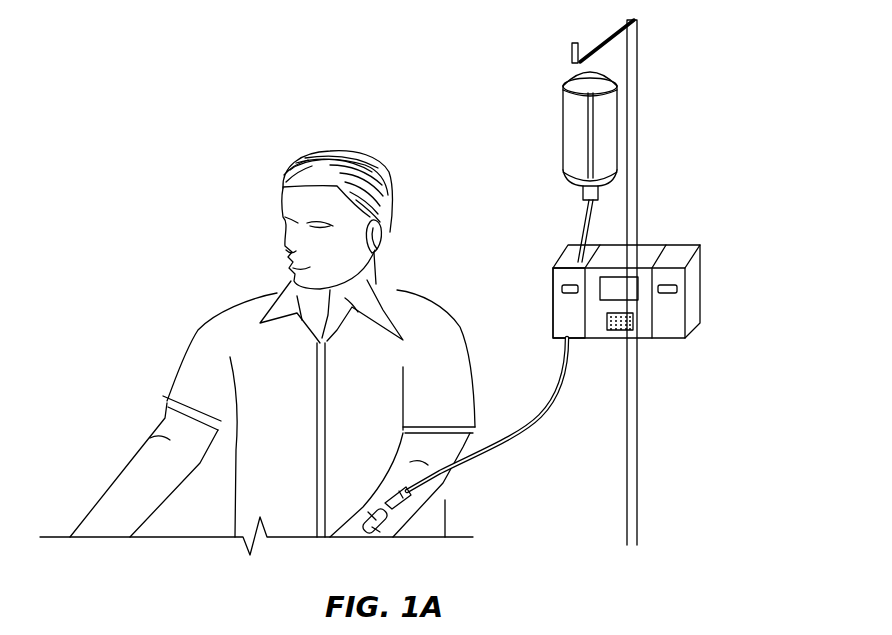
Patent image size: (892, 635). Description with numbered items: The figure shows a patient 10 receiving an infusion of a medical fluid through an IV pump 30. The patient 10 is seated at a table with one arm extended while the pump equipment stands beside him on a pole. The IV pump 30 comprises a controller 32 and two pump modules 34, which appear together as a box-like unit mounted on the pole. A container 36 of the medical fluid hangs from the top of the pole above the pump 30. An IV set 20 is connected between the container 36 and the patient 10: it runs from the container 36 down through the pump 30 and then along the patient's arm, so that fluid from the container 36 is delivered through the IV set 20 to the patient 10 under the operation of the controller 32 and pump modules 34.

The patient 10 is at (155, 93).
The IV set 20 is at (524, 436).
The IV pump 30 is at (716, 204).
The controller 32 is at (647, 256).
The pump module 34 is at (559, 319).
The container 36 is at (573, 132).